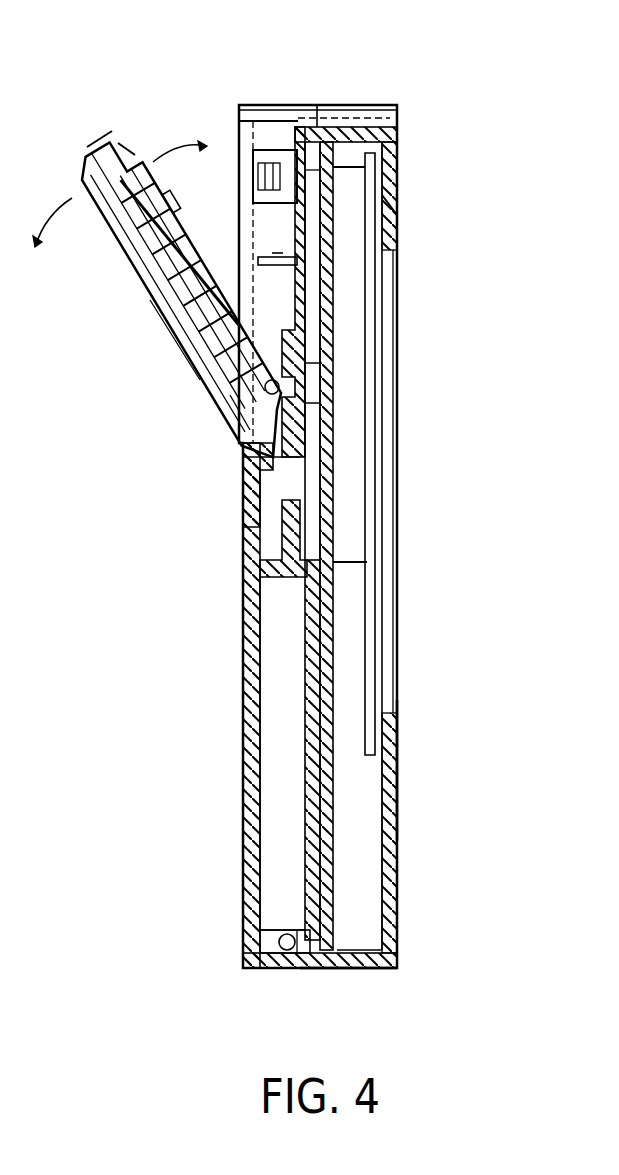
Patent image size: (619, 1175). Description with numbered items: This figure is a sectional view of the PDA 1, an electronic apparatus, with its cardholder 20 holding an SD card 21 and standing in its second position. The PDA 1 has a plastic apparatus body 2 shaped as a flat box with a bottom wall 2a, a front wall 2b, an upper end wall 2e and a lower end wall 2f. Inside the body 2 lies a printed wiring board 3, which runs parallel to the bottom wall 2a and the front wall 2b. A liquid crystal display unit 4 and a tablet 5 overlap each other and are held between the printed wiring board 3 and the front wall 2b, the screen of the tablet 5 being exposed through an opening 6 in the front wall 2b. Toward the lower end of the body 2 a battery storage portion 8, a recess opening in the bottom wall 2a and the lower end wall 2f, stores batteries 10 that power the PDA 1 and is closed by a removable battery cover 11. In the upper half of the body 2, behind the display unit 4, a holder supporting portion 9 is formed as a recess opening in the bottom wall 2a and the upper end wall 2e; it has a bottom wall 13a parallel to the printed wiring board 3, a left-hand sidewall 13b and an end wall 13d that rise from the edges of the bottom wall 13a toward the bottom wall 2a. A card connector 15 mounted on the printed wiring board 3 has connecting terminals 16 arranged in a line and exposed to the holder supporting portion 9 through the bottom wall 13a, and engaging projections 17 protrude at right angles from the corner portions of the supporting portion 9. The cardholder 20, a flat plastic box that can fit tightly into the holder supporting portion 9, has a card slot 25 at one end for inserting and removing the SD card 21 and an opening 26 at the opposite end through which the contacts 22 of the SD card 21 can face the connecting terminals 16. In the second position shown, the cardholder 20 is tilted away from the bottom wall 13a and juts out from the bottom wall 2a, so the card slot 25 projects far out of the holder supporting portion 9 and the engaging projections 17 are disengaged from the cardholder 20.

The PDA 1 is at (352, 84).
The apparatus body 2 is at (396, 162).
The bottom wall 2a is at (245, 497).
The front wall 2b is at (399, 770).
The upper end wall 2e is at (375, 126).
The lower end wall 2f is at (370, 969).
The printed wiring board 3 is at (333, 520).
The liquid crystal display unit 4 is at (350, 453).
The tablet 5 is at (377, 490).
The opening 6 is at (385, 207).
The battery storage portion 8 is at (305, 717).
The holder supporting portion 9 is at (287, 313).
The batteries 10 is at (272, 822).
The battery cover 11 is at (242, 897).
The bottom wall 13a is at (330, 282).
The left-hand sidewall 13b is at (265, 228).
The end wall 13d is at (248, 463).
The card connector 15 is at (318, 385).
The connecting terminals 16 is at (235, 405).
The engaging projections 17 is at (283, 252).
The cardholder 20 is at (165, 318).
The SD card 21 is at (90, 147).
The contacts 22 is at (225, 380).
The card slot 25 is at (120, 143).
The opening 26 is at (190, 348).